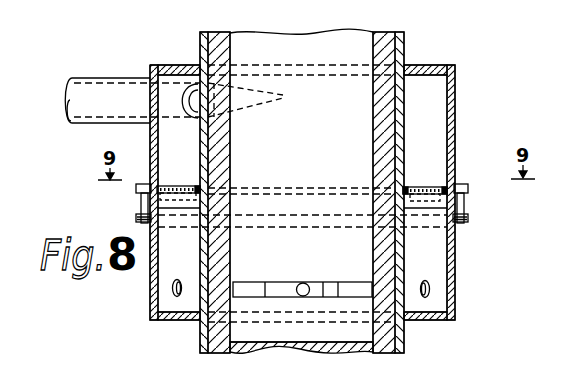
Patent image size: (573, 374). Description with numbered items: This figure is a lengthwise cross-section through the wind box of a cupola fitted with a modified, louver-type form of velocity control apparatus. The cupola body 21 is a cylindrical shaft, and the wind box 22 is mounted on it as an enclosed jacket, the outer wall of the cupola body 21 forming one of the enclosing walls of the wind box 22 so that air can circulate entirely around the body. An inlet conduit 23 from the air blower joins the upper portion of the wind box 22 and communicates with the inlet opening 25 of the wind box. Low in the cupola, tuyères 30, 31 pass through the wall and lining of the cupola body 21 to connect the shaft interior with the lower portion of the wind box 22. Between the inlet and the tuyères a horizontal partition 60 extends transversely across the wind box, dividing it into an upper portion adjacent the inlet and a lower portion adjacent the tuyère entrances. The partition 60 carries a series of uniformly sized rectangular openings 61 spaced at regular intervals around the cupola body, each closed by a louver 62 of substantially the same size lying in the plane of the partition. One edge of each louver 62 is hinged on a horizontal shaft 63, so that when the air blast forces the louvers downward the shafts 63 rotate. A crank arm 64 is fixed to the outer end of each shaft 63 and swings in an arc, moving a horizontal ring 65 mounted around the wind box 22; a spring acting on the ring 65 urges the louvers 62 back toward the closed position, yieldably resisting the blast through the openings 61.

The cupola body 21 is at (404, 50).
The wind box 22 is at (455, 108).
The inlet conduit 23 is at (100, 123).
The inlet opening 25 is at (193, 83).
The tuyère 30 is at (258, 282).
The tuyère 31 is at (318, 282).
The horizontal partition 60 is at (330, 188).
The rectangular openings 61 is at (196, 186).
The louvers 62 is at (168, 186).
The horizontal shaft 63 is at (148, 184).
The crank arm 64 is at (140, 200).
The ring 65 is at (300, 227).